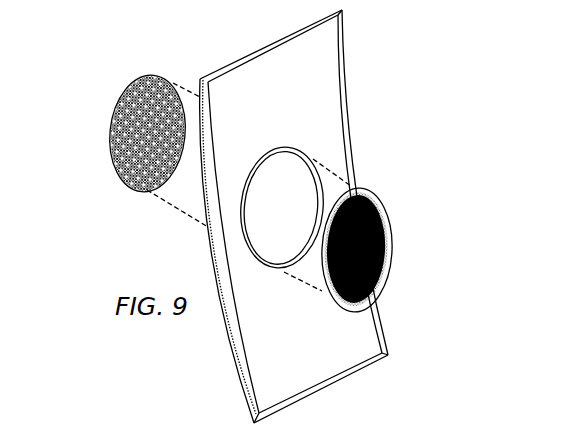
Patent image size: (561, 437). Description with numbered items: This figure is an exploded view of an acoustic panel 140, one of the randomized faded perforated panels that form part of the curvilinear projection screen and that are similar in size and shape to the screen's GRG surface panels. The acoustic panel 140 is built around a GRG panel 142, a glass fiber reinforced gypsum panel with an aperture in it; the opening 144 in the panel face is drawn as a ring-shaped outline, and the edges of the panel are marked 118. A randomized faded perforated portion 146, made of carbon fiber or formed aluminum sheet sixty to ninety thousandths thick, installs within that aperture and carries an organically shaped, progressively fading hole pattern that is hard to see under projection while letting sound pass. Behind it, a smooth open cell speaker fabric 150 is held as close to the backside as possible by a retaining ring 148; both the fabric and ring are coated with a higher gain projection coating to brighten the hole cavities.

The acoustic panel 140 is at (400, 73).
The GRG panel 142 is at (327, 107).
The ring 144 is at (313, 175).
The randomized faded perforated portion 146 is at (388, 223).
The retaining ring 148 is at (128, 87).
The speaker fabric 150 is at (132, 185).
The panel edge 118 is at (256, 51).